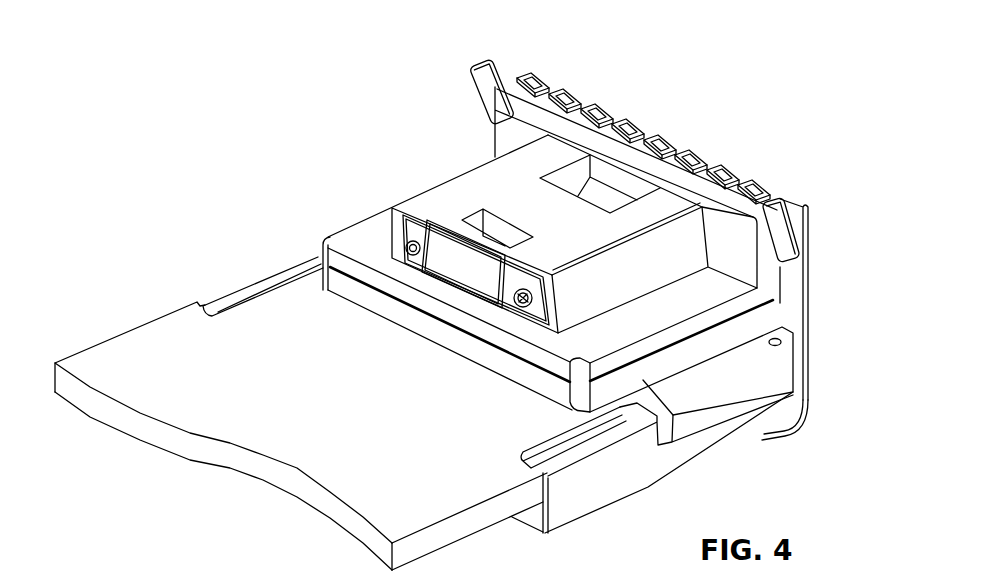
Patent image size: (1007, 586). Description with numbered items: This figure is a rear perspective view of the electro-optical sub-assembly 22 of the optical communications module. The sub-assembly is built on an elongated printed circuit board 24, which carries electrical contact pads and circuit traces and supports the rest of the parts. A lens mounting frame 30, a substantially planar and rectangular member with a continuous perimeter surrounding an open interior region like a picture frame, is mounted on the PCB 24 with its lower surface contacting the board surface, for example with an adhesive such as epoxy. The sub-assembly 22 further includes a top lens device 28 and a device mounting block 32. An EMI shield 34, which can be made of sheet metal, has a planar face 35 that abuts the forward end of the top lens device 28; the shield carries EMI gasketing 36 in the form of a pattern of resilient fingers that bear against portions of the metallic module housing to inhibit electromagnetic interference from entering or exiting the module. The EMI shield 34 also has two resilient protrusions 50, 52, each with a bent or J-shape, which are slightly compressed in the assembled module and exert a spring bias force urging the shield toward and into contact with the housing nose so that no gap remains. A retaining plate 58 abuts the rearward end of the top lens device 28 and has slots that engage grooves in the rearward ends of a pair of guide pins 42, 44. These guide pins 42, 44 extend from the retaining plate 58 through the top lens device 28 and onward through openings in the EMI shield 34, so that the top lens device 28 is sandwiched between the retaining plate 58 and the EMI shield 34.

The electro-optical sub-assembly 22 is at (365, 155).
The printed circuit board 24 is at (170, 317).
The top lens device 28 is at (452, 187).
The lens mounting frame 30 is at (703, 353).
The device mounting block 32 is at (610, 500).
The EMI shield 34 is at (465, 92).
The planar face 35 is at (808, 317).
The EMI gasketing 36 is at (728, 165).
The guide pin 42 is at (520, 308).
The guide pin 44 is at (408, 252).
The resilient protrusion 50 is at (510, 60).
The resilient protrusion 52 is at (810, 225).
The retaining plate 58 is at (400, 230).